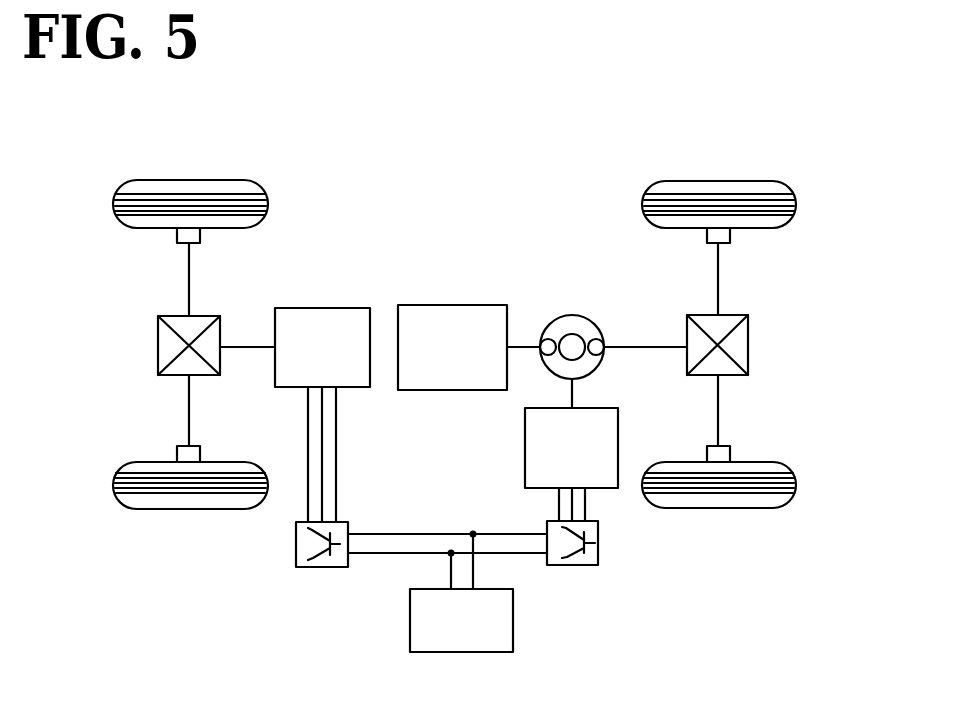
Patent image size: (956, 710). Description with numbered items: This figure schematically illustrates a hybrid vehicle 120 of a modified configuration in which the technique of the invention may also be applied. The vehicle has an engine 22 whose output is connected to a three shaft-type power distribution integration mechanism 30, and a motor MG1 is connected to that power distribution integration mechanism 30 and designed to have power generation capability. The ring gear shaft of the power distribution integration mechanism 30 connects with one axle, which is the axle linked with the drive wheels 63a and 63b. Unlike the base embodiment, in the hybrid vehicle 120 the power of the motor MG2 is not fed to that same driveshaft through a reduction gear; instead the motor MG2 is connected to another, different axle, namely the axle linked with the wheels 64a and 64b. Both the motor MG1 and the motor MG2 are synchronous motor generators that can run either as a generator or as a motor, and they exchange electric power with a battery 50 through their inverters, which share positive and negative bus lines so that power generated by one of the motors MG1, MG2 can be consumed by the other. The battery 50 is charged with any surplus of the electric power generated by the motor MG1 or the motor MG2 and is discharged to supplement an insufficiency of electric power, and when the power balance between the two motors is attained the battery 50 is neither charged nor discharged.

The hybrid vehicle 120 is at (483, 159).
The engine 22 is at (452, 305).
The power distribution integration mechanism 30 is at (572, 315).
The motor MG1 is at (525, 448).
The motor MG2 is at (320, 308).
The battery 50 is at (513, 619).
The drive wheel 63a is at (718, 182).
The drive wheel 63b is at (718, 507).
The wheel 64a is at (189, 180).
The wheel 64b is at (189, 508).